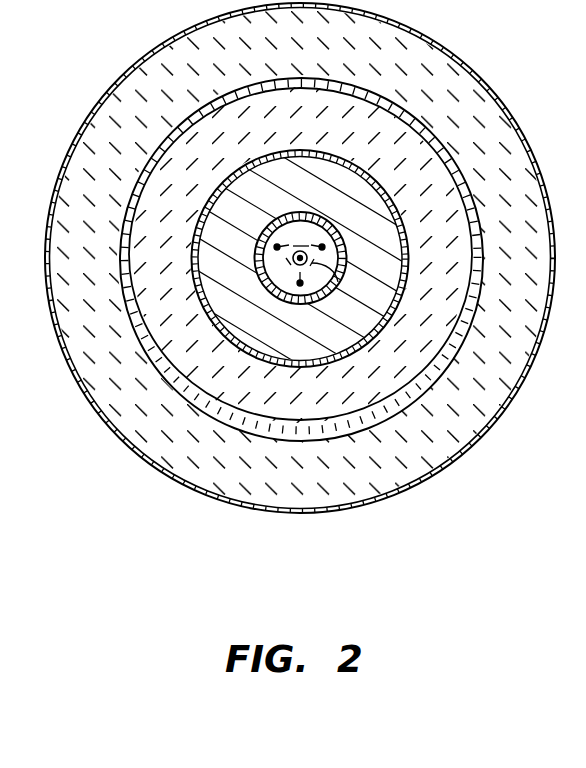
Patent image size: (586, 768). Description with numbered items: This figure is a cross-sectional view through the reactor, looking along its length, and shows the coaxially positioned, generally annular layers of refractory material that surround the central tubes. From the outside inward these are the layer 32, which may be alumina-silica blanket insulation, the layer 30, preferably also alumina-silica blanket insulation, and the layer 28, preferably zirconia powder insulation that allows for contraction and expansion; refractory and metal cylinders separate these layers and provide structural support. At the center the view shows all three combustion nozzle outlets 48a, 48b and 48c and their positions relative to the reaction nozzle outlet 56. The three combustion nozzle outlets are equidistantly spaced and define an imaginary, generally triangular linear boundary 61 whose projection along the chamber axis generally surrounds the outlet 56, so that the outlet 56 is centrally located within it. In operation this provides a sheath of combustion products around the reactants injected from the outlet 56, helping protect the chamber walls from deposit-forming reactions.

The layer 32 is at (98, 272).
The layer 30 is at (173, 272).
The layer 28 is at (242, 274).
The reaction nozzle outlet 56 is at (300, 246).
The outlet end 48a is at (275, 246).
The outlet end 48b is at (324, 246).
The outlet end 48c is at (300, 285).
The linear boundary 61 is at (338, 282).